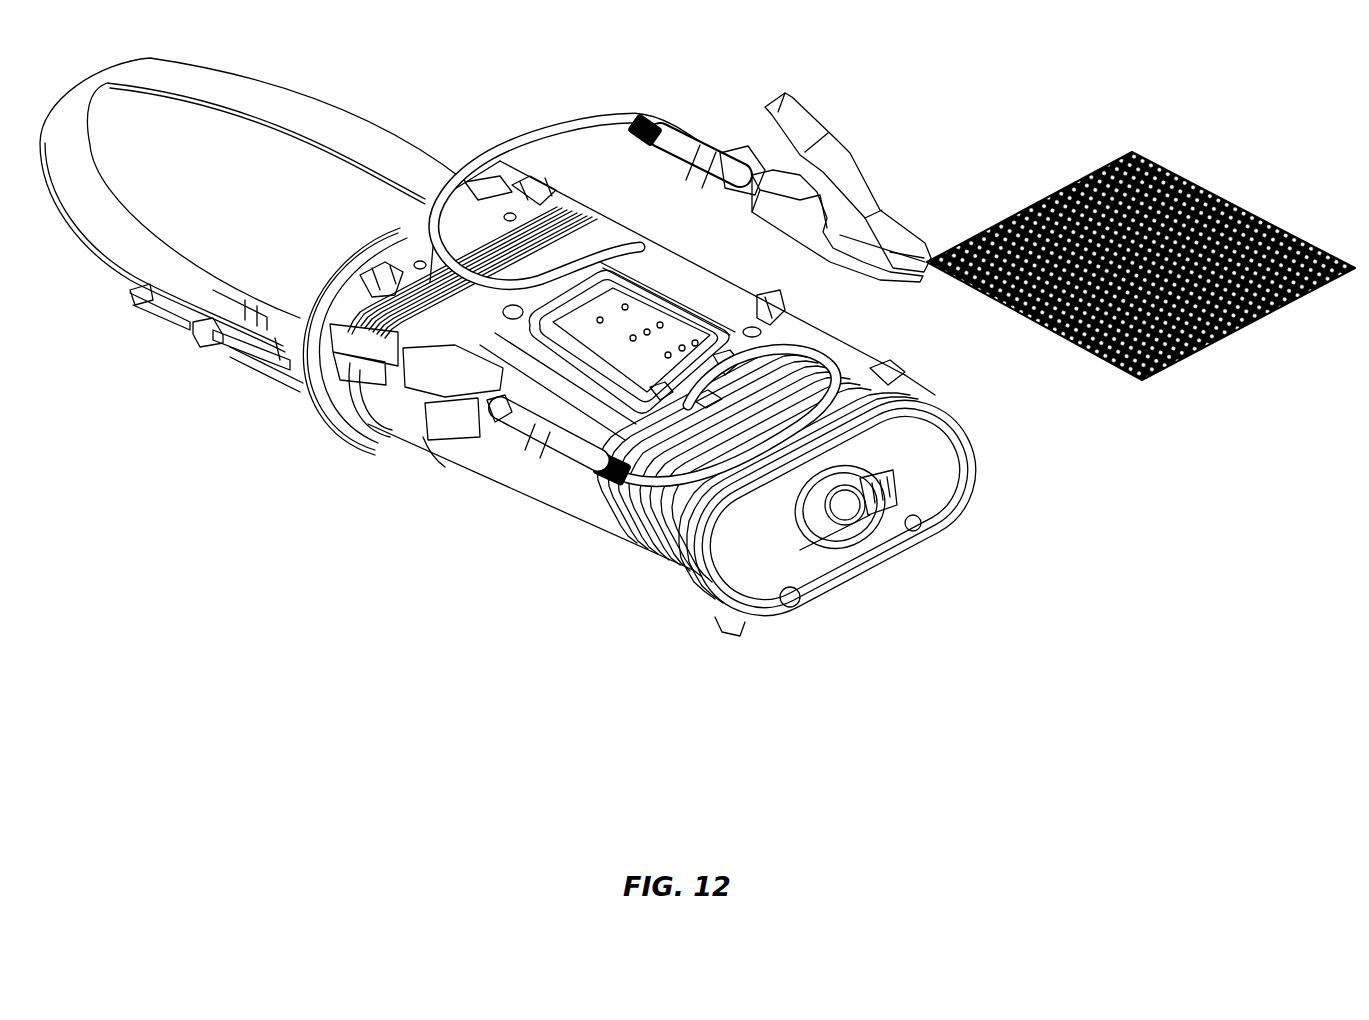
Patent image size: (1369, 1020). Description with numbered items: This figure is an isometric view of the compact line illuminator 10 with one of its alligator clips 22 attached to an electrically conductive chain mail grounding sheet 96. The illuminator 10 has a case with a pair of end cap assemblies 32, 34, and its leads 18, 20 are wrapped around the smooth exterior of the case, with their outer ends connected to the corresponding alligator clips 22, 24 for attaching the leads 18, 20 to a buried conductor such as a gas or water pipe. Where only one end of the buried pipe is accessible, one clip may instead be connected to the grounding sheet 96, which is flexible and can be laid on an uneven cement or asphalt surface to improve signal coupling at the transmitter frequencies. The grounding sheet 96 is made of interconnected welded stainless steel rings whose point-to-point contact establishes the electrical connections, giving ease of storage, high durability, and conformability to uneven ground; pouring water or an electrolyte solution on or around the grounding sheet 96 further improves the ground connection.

The compact line illuminator 10 is at (487, 320).
The lead 18 is at (578, 118).
The lead 20 is at (838, 336).
The alligator clip 22 is at (857, 157).
The alligator clip 24 is at (455, 440).
The end cap assembly 32 is at (290, 383).
The end cap assembly 34 is at (990, 427).
The grounding sheet 96 is at (1230, 197).